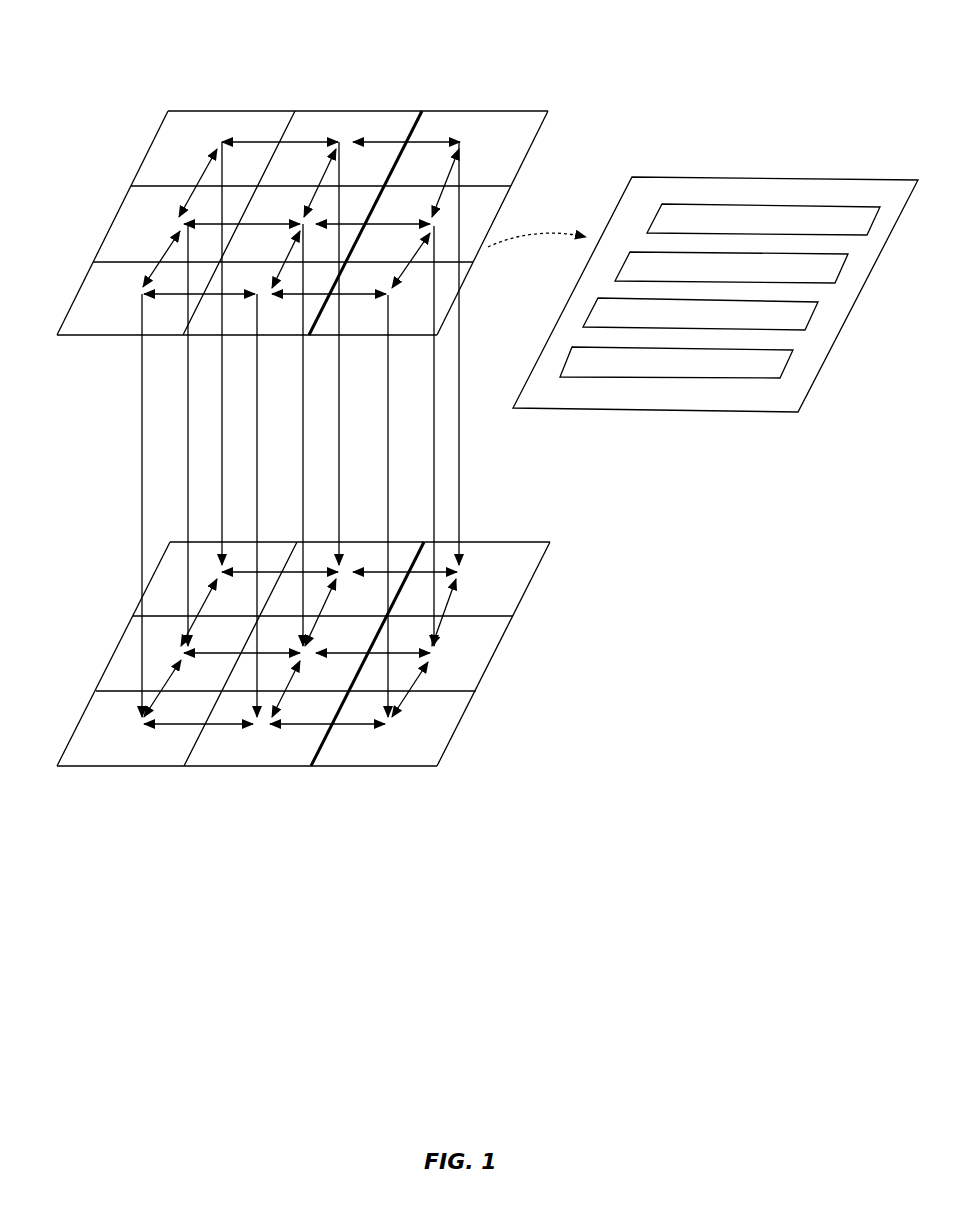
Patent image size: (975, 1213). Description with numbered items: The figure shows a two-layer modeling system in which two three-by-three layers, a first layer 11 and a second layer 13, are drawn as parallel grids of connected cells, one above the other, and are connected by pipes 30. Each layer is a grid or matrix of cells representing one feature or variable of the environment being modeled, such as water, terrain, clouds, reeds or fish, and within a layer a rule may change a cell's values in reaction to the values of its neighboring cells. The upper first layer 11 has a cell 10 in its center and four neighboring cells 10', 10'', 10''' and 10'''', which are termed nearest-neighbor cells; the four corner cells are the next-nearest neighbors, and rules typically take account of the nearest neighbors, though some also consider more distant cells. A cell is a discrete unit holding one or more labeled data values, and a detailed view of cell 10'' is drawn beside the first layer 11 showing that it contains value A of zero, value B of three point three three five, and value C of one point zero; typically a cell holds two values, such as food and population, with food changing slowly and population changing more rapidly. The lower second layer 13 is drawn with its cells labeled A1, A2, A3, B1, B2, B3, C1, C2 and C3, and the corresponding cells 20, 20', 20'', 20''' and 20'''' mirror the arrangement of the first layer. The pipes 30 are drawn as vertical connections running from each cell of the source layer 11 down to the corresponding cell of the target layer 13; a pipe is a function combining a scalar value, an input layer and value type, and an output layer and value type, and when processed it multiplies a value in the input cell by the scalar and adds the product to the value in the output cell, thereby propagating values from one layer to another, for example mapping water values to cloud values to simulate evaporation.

The first layer 11 is at (547, 57).
The cell 10 is at (245, 141).
The neighboring cell 10' is at (358, 87).
The neighboring cell 10'' is at (677, 253).
The neighboring cell 10''' is at (247, 371).
The neighboring cell 10'''' is at (98, 223).
The pipes 30 is at (492, 423).
The second layer 13 is at (585, 534).
The data cell of second data structure 20 is at (242, 573).
The top row boundary of second data structure 20' is at (360, 517).
The right boundary of second data structure 20'' is at (500, 654).
The bottom boundary of second data structure 20''' is at (247, 796).
The left boundary of second data structure 20'''' is at (100, 654).
The cell A1 of second data structure A1 is at (272, 575).
The cell A2 of second data structure A2 is at (394, 578).
The cell A3 of second data structure A3 is at (455, 608).
The cell B1 of second data structure B1 is at (178, 620).
The cell B2 of second data structure B2 is at (242, 653).
The cell B3 of second data structure B3 is at (373, 653).
The cell C1 of second data structure C1 is at (191, 697).
The cell C2 of second data structure C2 is at (320, 697).
The cell C3 of second data structure C3 is at (407, 699).